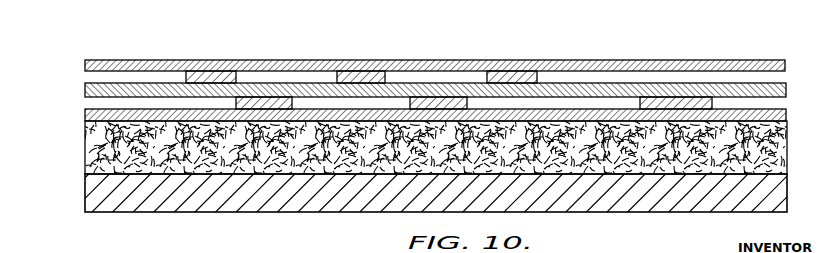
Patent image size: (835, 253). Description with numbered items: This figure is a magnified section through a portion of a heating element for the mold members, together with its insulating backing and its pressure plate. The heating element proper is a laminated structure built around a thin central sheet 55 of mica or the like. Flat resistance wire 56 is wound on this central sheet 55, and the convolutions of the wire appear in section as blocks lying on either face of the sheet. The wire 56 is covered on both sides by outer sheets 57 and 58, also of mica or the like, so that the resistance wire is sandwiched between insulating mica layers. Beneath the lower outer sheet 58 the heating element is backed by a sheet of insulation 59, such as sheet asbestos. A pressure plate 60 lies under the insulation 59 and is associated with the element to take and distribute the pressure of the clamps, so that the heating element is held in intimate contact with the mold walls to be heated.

The central sheet 55 is at (419, 92).
The flat resistance wire 56 is at (217, 71).
The outer sheet 57 is at (577, 62).
The outer sheet 58 is at (786, 110).
The sheet of insulation 59 is at (89, 162).
The pressure plate 60 is at (372, 205).